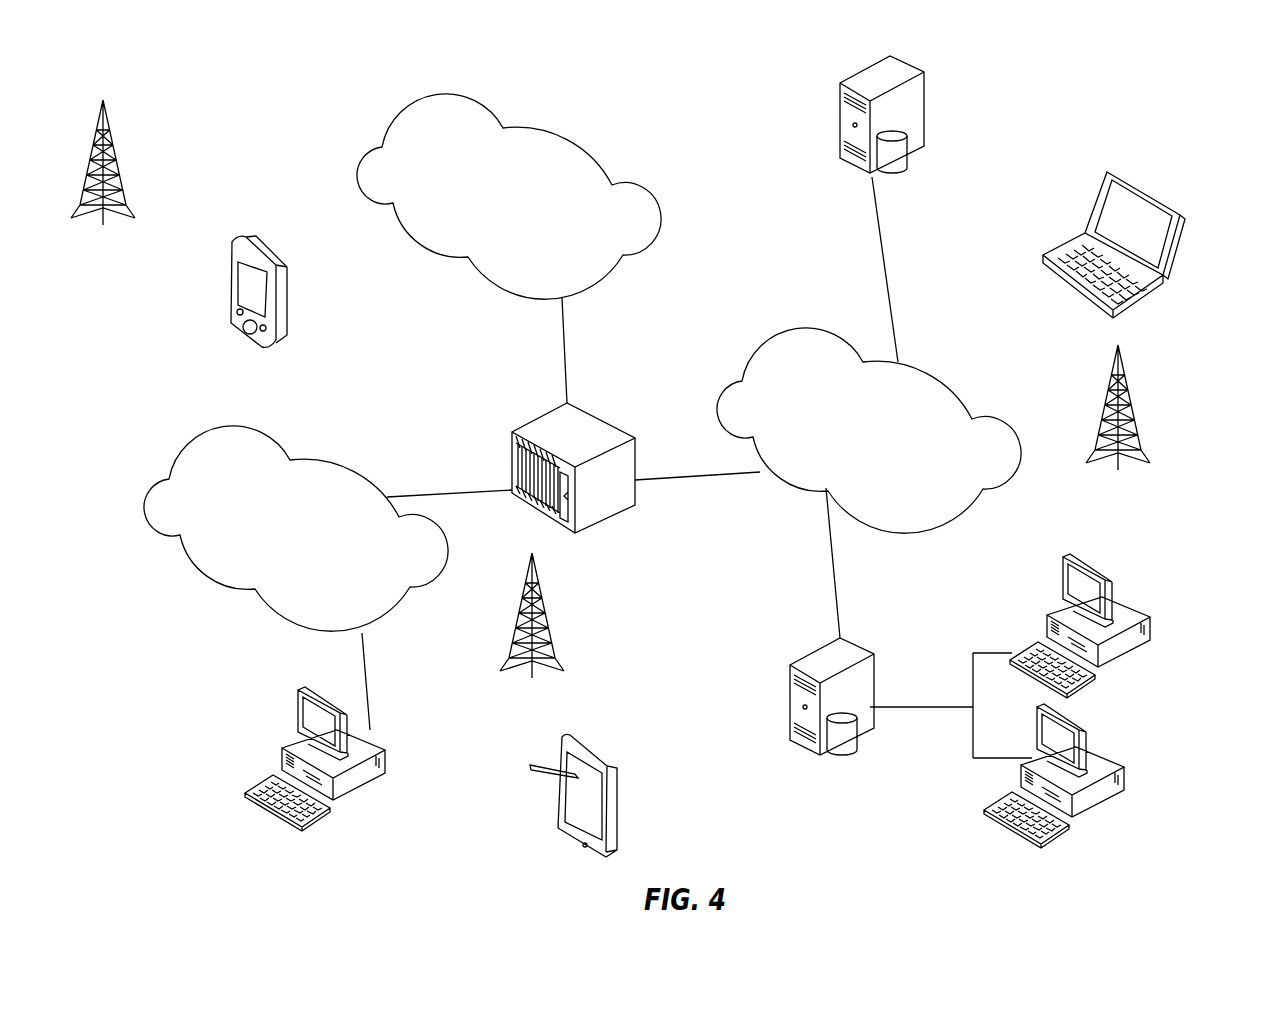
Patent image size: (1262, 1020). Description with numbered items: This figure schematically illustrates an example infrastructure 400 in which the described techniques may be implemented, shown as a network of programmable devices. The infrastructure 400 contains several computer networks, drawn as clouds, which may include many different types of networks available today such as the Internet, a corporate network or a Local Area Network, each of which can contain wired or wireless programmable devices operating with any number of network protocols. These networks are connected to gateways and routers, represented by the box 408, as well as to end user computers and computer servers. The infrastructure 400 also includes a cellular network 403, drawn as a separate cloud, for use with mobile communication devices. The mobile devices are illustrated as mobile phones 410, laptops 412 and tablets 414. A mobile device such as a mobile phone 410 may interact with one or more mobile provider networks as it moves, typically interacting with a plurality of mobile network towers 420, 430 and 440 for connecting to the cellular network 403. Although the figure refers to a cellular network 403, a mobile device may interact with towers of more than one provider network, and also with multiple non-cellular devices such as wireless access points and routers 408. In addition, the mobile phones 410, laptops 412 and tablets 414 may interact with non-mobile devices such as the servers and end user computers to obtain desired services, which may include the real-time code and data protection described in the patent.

The infrastructure 400 is at (1020, 143).
The cellular network 403 is at (557, 131).
The gateways and routers 408 is at (593, 417).
The mobile phones 410 is at (260, 248).
The laptops 412 is at (1145, 190).
The tablets 414 is at (600, 750).
The mobile network tower 420 is at (532, 634).
The mobile network tower 430 is at (1118, 426).
The mobile network tower 440 is at (103, 181).